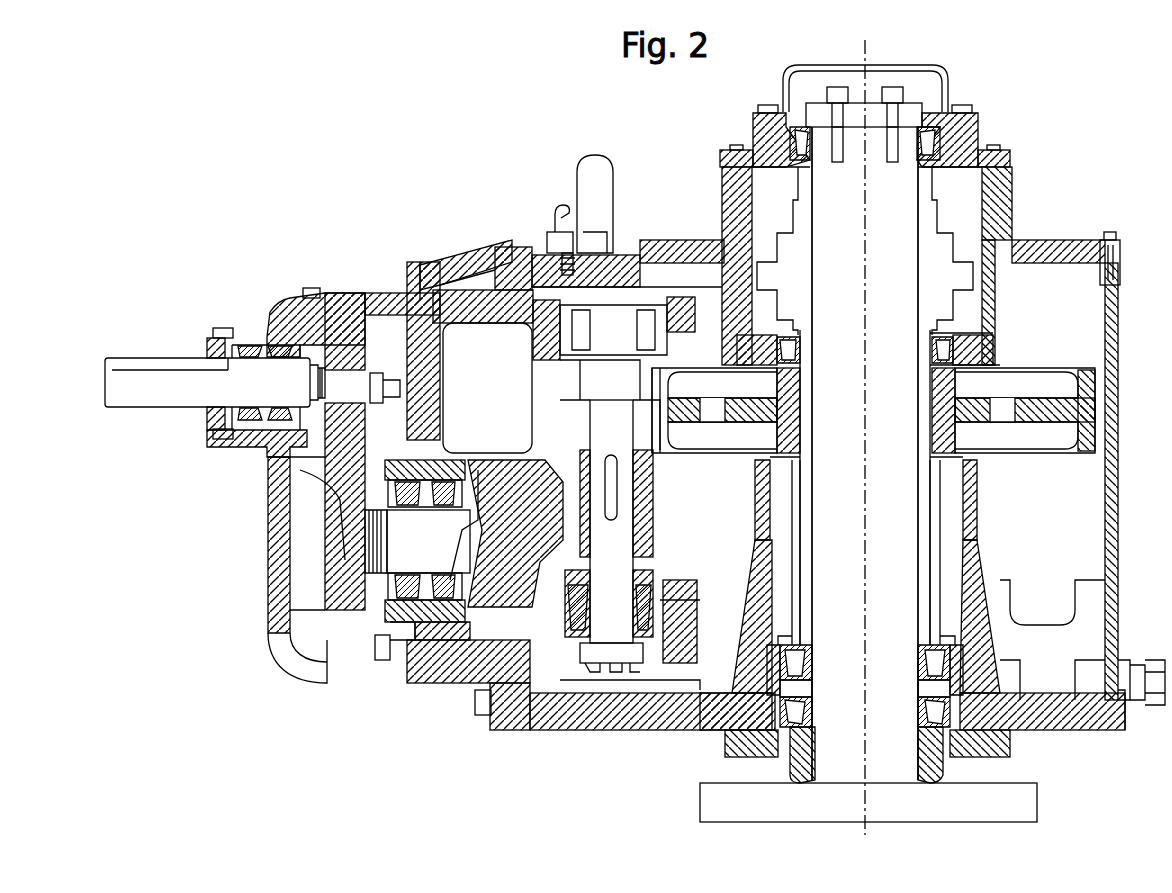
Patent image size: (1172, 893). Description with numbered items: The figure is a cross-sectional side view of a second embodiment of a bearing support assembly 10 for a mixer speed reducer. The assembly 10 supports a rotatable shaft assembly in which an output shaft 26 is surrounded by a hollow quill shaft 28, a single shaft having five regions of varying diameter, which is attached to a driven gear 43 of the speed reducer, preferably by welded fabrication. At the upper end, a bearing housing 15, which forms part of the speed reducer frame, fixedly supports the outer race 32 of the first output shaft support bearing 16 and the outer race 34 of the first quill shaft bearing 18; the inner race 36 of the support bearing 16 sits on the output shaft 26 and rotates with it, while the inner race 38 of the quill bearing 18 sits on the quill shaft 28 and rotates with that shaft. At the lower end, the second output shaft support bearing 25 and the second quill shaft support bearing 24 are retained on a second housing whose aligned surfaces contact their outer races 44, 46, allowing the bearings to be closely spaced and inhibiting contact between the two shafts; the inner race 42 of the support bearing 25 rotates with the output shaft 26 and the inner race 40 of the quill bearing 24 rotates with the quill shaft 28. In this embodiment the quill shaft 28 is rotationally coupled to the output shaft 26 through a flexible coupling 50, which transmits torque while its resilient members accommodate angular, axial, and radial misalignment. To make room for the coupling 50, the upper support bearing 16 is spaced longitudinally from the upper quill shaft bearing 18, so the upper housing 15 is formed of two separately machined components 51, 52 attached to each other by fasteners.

The bearing support assembly 10 is at (971, 81).
The bearing housing 15 is at (1100, 242).
The first output shaft support bearing 16 is at (930, 147).
The first quill shaft bearing 18 is at (931, 333).
The second quill shaft support bearing 24 is at (930, 698).
The second output shaft support bearing 25 is at (940, 637).
The output shaft 26 is at (854, 511).
The quill shaft 28 is at (917, 381).
The outer race 32 is at (945, 137).
The outer race 34 is at (963, 348).
The inner race 36 is at (916, 72).
The inner race 38 is at (930, 351).
The inner race 40 is at (933, 658).
The inner race 42 is at (933, 712).
The driven gear 43 is at (719, 402).
The outer race 44 is at (932, 747).
The outer race 46 is at (960, 656).
The flexible coupling 50 is at (983, 218).
The separately machined component 51 is at (980, 145).
The separately machined component 52 is at (1060, 242).